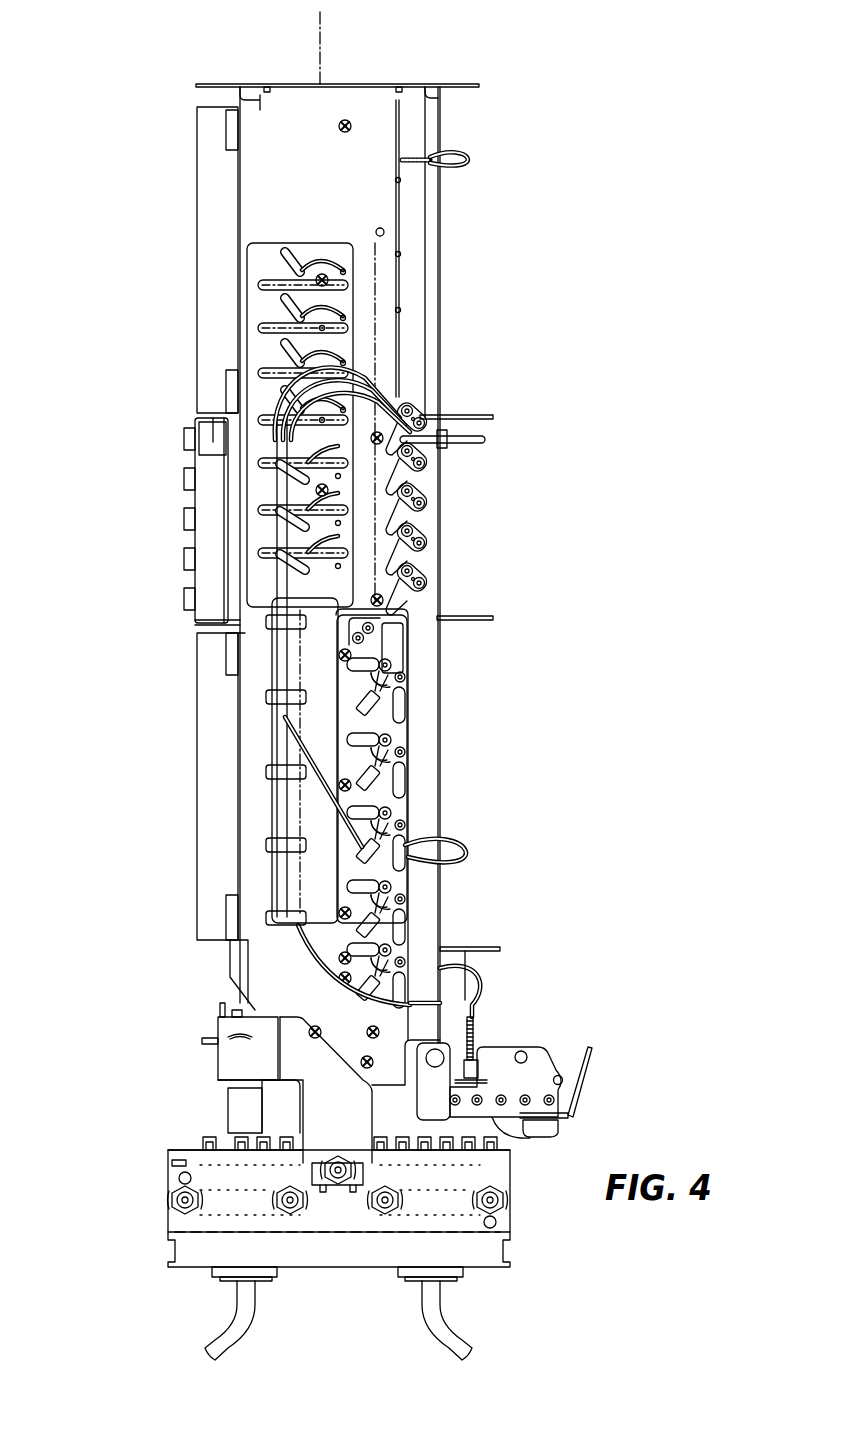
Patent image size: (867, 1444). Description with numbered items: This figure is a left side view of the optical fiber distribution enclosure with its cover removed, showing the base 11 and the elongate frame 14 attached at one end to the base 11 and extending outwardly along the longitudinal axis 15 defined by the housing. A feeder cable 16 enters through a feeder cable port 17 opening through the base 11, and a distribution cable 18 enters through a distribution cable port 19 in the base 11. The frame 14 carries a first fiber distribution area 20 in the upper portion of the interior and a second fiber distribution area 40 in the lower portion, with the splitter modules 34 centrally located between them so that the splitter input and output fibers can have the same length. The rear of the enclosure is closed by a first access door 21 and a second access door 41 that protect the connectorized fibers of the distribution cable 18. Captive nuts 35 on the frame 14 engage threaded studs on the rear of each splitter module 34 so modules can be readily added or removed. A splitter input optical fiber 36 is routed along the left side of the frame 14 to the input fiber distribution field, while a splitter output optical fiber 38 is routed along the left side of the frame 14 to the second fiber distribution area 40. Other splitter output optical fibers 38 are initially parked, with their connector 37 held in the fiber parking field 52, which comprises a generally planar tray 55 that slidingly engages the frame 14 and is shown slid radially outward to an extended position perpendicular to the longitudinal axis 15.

The base 11 is at (172, 1170).
The frame 14 is at (442, 388).
The longitudinal axis 15 is at (318, 45).
The feeder cable 16 is at (237, 1325).
The feeder cable port 17 is at (212, 1277).
The distribution cable 18 is at (470, 1325).
The distribution cable port 19 is at (450, 1283).
The first fiber distribution area 20 is at (481, 282).
The first access door 21 is at (197, 248).
The splitter module 34 is at (213, 418).
The captive nuts 35 is at (188, 522).
The splitter input optical fiber 36 is at (300, 945).
The connector 37 is at (475, 1040).
The splitter output optical fibers 38 is at (470, 162).
The second fiber distribution area 40 is at (478, 768).
The second access door 41 is at (197, 775).
The fiber parking field 52 is at (560, 1122).
The tray 55 is at (548, 1060).